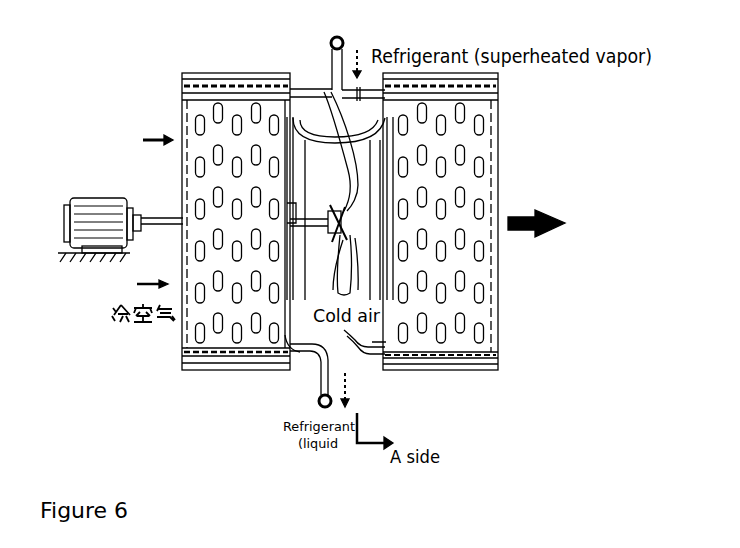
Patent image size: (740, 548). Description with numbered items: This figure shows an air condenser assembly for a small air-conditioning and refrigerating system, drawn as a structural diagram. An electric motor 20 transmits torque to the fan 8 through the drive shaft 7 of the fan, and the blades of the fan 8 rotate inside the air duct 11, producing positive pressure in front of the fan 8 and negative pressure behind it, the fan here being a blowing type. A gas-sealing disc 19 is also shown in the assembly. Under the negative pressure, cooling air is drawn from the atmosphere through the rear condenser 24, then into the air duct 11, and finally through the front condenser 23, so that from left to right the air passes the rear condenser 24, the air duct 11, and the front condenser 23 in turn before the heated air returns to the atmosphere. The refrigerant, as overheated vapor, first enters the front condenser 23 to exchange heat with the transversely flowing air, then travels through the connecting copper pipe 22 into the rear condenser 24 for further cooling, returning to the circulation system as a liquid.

The electric motor 20 is at (83, 195).
The drive shaft of the fan 7 is at (142, 215).
The gas-sealing disc 19 is at (180, 205).
The fan 8 is at (343, 177).
The connecting copper pipe 22 is at (308, 90).
The rear condenser 24 is at (228, 300).
The air duct 11 is at (293, 318).
The front condenser 23 is at (440, 370).